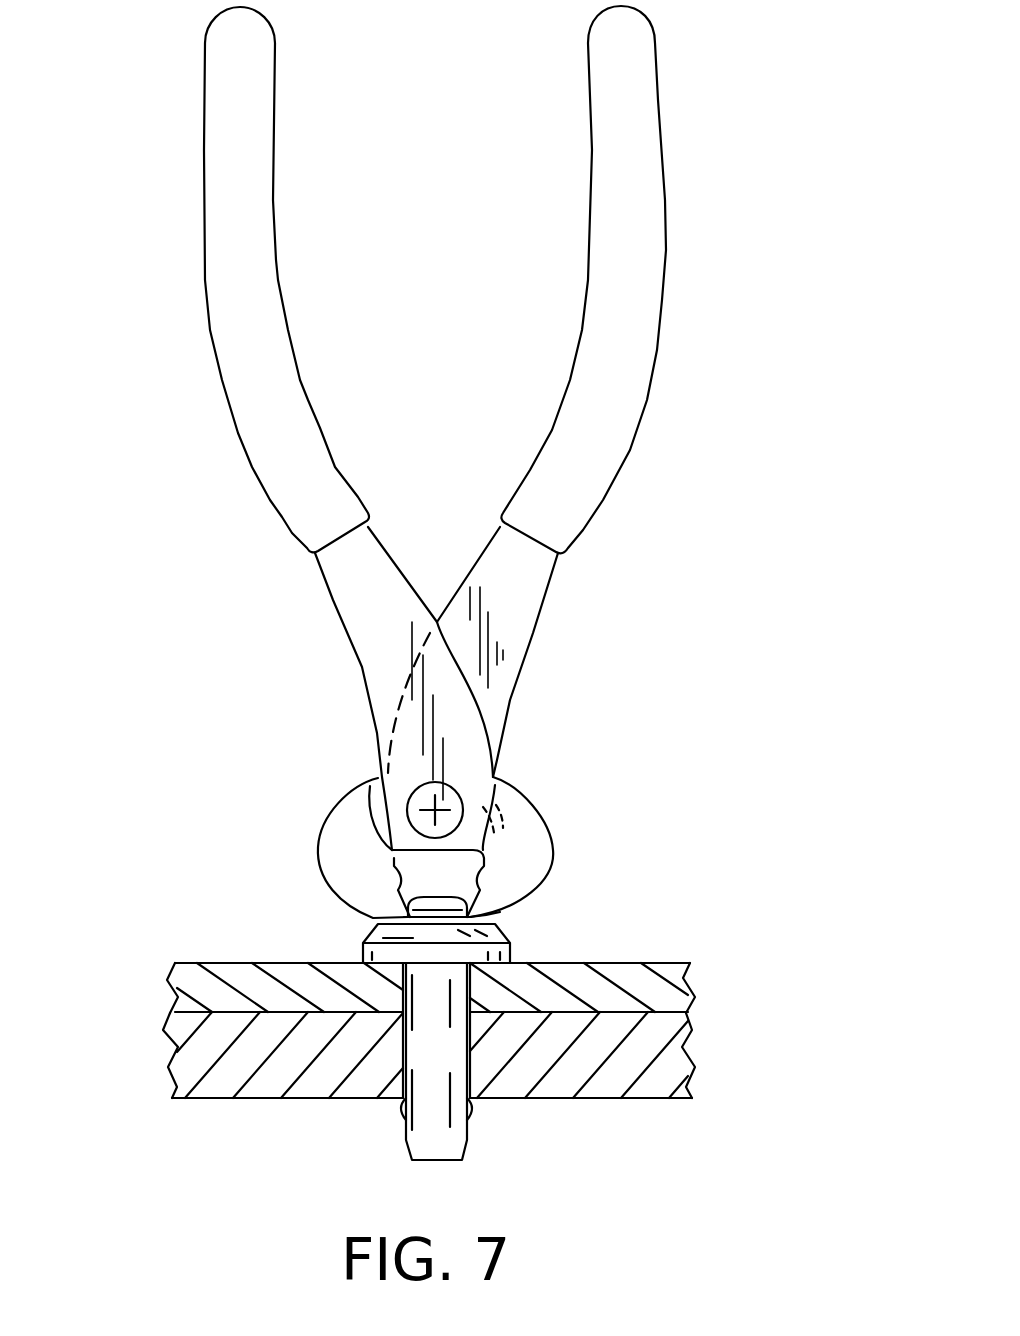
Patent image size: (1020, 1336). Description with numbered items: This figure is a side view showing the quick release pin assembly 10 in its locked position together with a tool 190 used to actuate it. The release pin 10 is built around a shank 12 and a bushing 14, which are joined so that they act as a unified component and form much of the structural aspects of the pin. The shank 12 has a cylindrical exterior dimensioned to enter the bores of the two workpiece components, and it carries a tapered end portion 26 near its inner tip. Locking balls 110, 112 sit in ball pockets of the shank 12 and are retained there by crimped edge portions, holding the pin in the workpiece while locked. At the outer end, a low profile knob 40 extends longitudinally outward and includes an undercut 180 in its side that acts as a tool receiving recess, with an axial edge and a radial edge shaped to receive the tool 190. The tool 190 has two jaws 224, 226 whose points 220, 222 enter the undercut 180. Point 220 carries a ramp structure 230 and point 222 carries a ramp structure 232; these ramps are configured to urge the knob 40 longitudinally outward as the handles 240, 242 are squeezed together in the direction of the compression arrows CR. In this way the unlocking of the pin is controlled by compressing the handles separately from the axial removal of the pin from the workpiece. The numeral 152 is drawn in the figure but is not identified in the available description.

The quick release pin assembly 10 is at (553, 927).
The shank 12 is at (468, 1062).
The bushing 14 is at (518, 948).
The tapered end portion 26 is at (470, 1152).
The knob 40 is at (447, 887).
The locking ball 110 is at (397, 1112).
The locking ball 112 is at (477, 1110).
The aperture 152 is at (443, 920).
The undercut 180 is at (311, 1099).
The tool 190 is at (678, 360).
The point 220 is at (397, 915).
The point 222 is at (500, 913).
The jaw 224 is at (335, 857).
The jaw 226 is at (540, 852).
The ramp structure 230 is at (393, 857).
The ramp structure 232 is at (468, 848).
The handle 240 is at (227, 303).
The handle 242 is at (643, 287).
The compression arrows CR is at (230, 197).